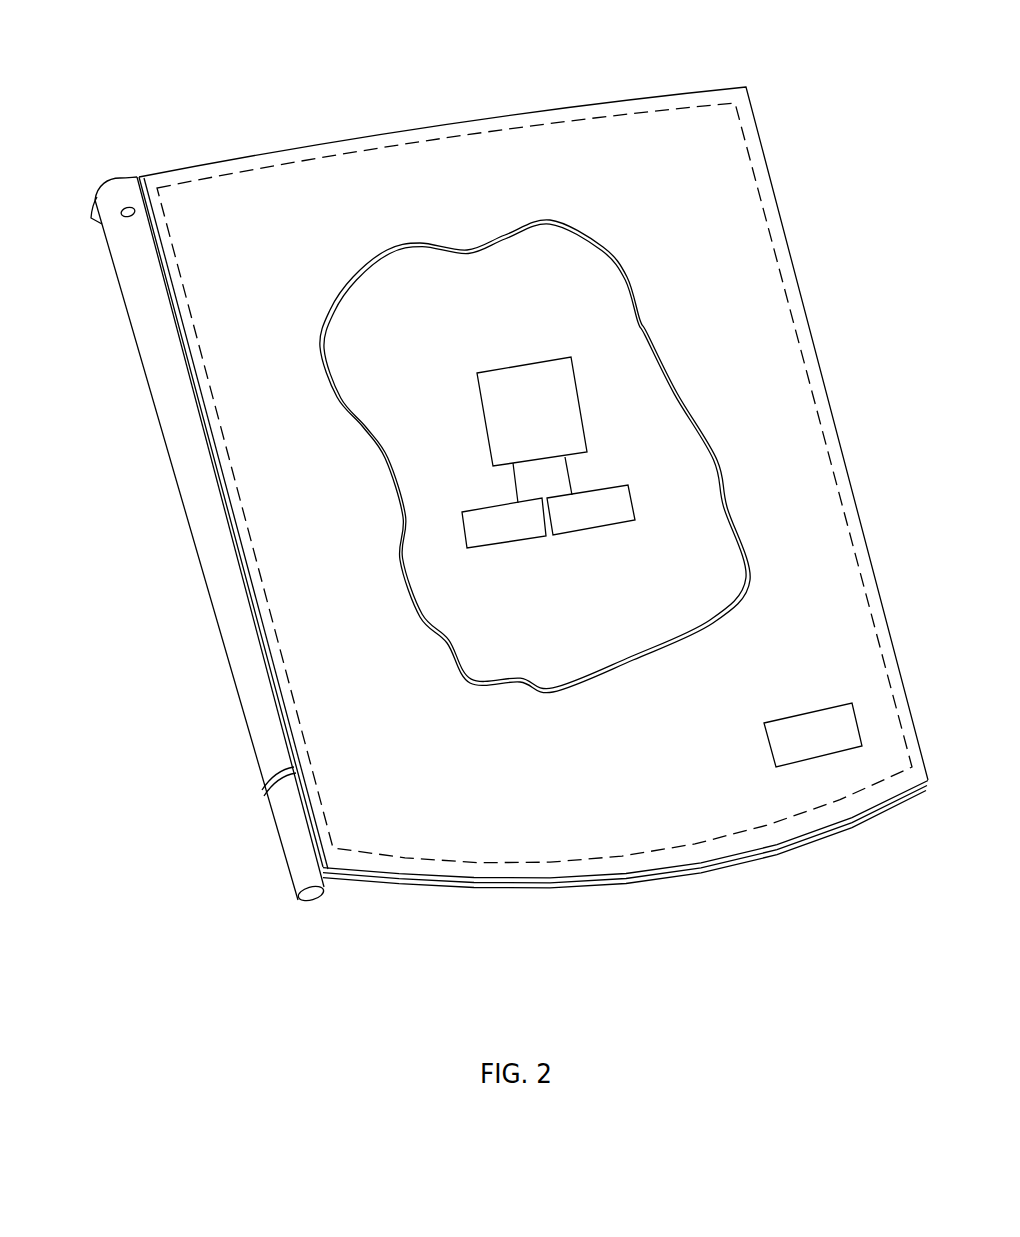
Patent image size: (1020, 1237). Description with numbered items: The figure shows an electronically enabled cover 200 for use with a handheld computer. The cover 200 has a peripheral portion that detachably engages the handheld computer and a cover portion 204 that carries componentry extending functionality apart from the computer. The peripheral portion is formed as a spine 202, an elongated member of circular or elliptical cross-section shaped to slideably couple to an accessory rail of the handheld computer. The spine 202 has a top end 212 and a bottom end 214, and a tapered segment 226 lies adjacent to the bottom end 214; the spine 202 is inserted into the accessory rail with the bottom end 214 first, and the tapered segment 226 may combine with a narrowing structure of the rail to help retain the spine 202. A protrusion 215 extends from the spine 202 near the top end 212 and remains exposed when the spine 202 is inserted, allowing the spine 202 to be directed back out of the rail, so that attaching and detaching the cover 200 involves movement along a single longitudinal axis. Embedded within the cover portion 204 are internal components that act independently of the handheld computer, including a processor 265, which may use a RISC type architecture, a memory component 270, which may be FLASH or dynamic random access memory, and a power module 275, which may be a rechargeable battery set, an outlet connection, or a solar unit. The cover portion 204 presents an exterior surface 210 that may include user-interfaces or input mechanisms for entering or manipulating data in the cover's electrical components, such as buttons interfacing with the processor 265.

The cover 200 is at (318, 95).
The spine 202 is at (240, 645).
The cover portion 204 is at (503, 183).
The exterior surface 210 is at (638, 826).
The top end 212 is at (122, 190).
The bottom end 214 is at (320, 897).
The protrusion 215 is at (88, 223).
The tapered segment 226 is at (284, 841).
The processor 265 is at (563, 428).
The memory component 270 is at (480, 536).
The power module 275 is at (624, 499).